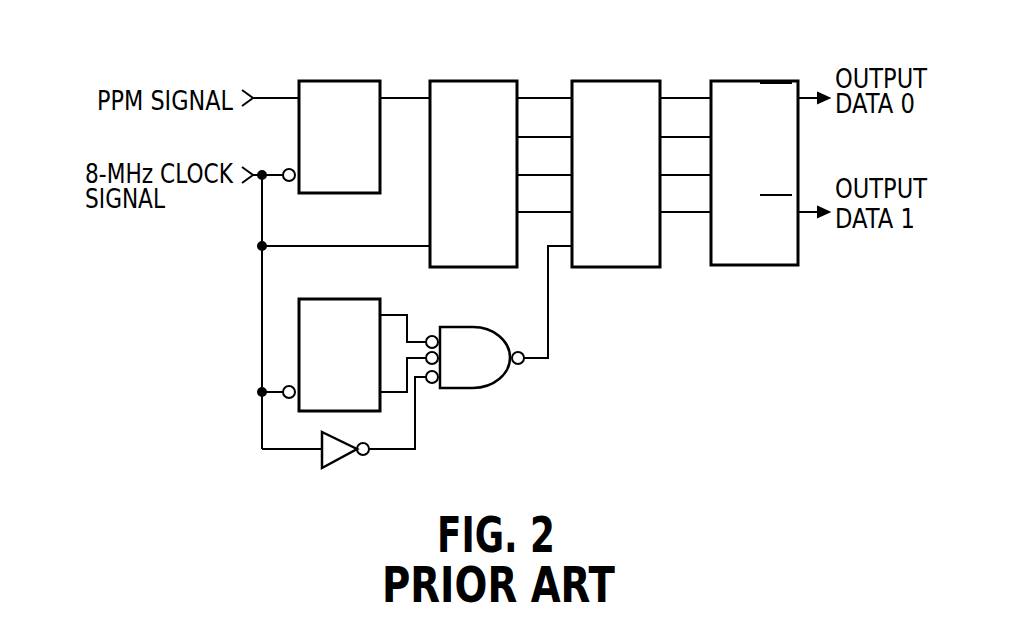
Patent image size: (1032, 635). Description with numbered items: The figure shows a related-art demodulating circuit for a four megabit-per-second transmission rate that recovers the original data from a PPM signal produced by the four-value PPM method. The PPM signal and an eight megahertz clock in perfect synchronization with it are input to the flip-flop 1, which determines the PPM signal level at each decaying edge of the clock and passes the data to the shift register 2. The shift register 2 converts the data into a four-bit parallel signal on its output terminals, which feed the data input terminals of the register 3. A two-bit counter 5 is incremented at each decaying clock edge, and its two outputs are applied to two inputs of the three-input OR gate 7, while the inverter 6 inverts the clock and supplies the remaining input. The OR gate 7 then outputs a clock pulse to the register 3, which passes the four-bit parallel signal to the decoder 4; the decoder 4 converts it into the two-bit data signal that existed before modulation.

The flip-flop 1 is at (338, 80).
The shift register 2 is at (469, 80).
The register 3 is at (614, 80).
The decoder 4 is at (752, 80).
The counter 5 is at (360, 298).
The inverter 6 is at (340, 463).
The OR gate 7 is at (498, 389).